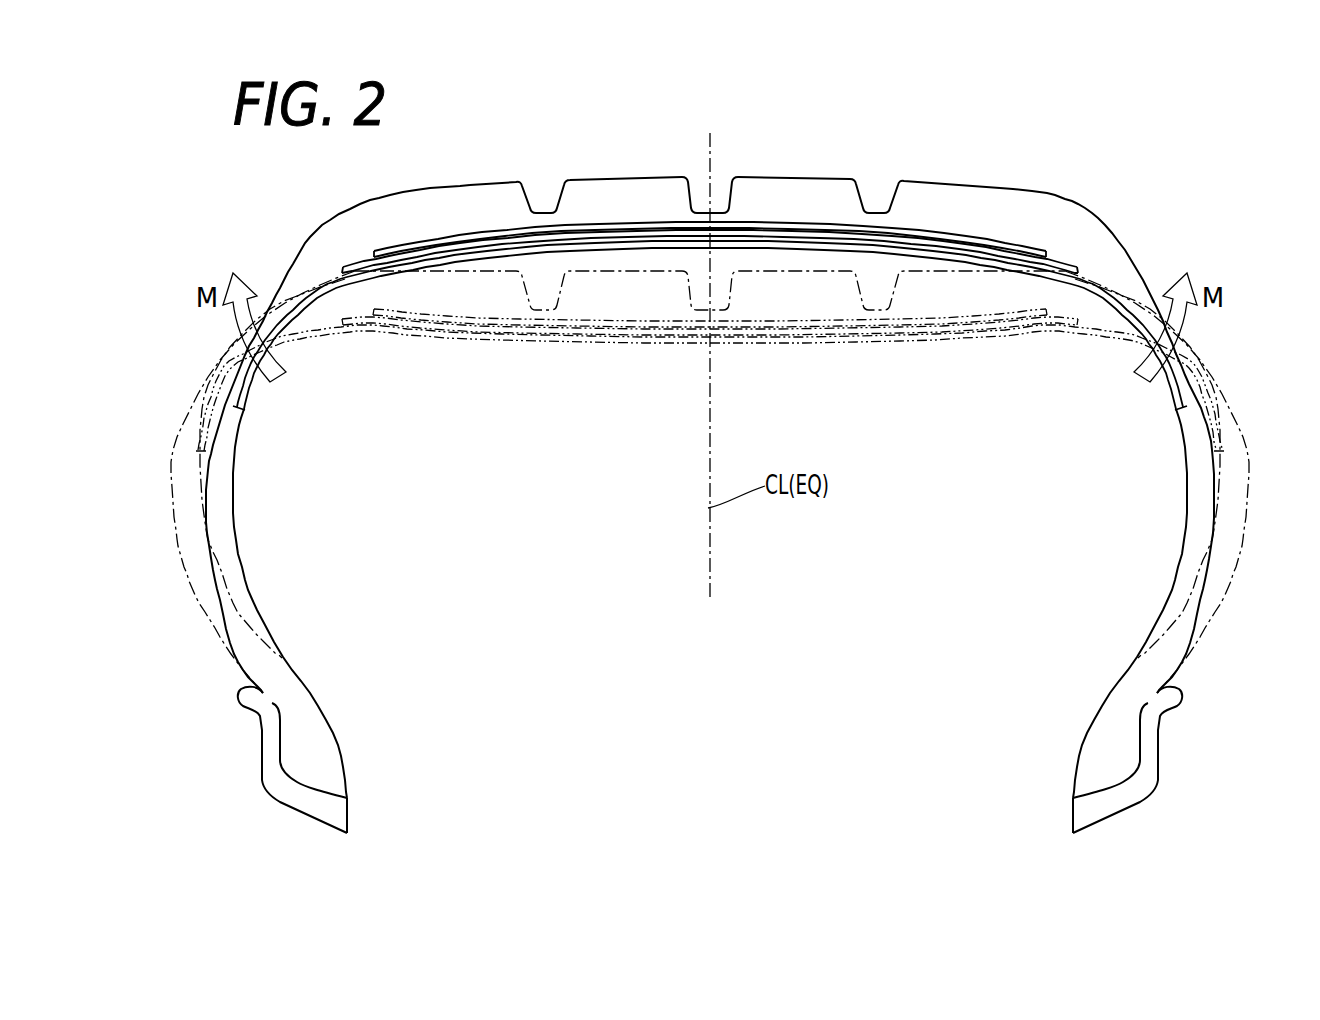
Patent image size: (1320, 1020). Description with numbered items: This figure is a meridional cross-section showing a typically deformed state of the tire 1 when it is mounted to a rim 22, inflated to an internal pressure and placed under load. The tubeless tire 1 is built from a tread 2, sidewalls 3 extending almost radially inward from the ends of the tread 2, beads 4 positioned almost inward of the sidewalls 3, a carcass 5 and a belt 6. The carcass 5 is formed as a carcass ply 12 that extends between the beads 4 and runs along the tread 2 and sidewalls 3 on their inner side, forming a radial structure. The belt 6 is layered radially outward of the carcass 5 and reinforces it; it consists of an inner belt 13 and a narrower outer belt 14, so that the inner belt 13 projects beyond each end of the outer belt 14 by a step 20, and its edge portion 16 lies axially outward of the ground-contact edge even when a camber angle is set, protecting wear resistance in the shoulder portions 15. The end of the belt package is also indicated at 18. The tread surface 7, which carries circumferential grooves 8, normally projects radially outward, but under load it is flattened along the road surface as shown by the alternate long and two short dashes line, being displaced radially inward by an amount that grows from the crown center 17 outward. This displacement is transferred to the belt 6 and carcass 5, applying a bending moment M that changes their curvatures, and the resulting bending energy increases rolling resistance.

The tire 1 is at (1160, 131).
The tread 2 is at (922, 185).
The sidewalls 3 is at (1208, 473).
The beads 4 is at (1118, 648).
The carcass 5 is at (1167, 382).
The carcass ply 12 is at (710, 388).
The belt 6 is at (710, 221).
The tread surface 7 is at (625, 268).
The grooves 8 is at (723, 168).
The inner belt 13 is at (835, 234).
The outer belt 14 is at (795, 224).
The shoulder portions 15 is at (1085, 178).
The edge portion 16 is at (1078, 270).
The crown center 17 is at (708, 176).
The belt ply edge 18 is at (1047, 251).
The step 20 is at (346, 252).
The rim 22 is at (1150, 758).